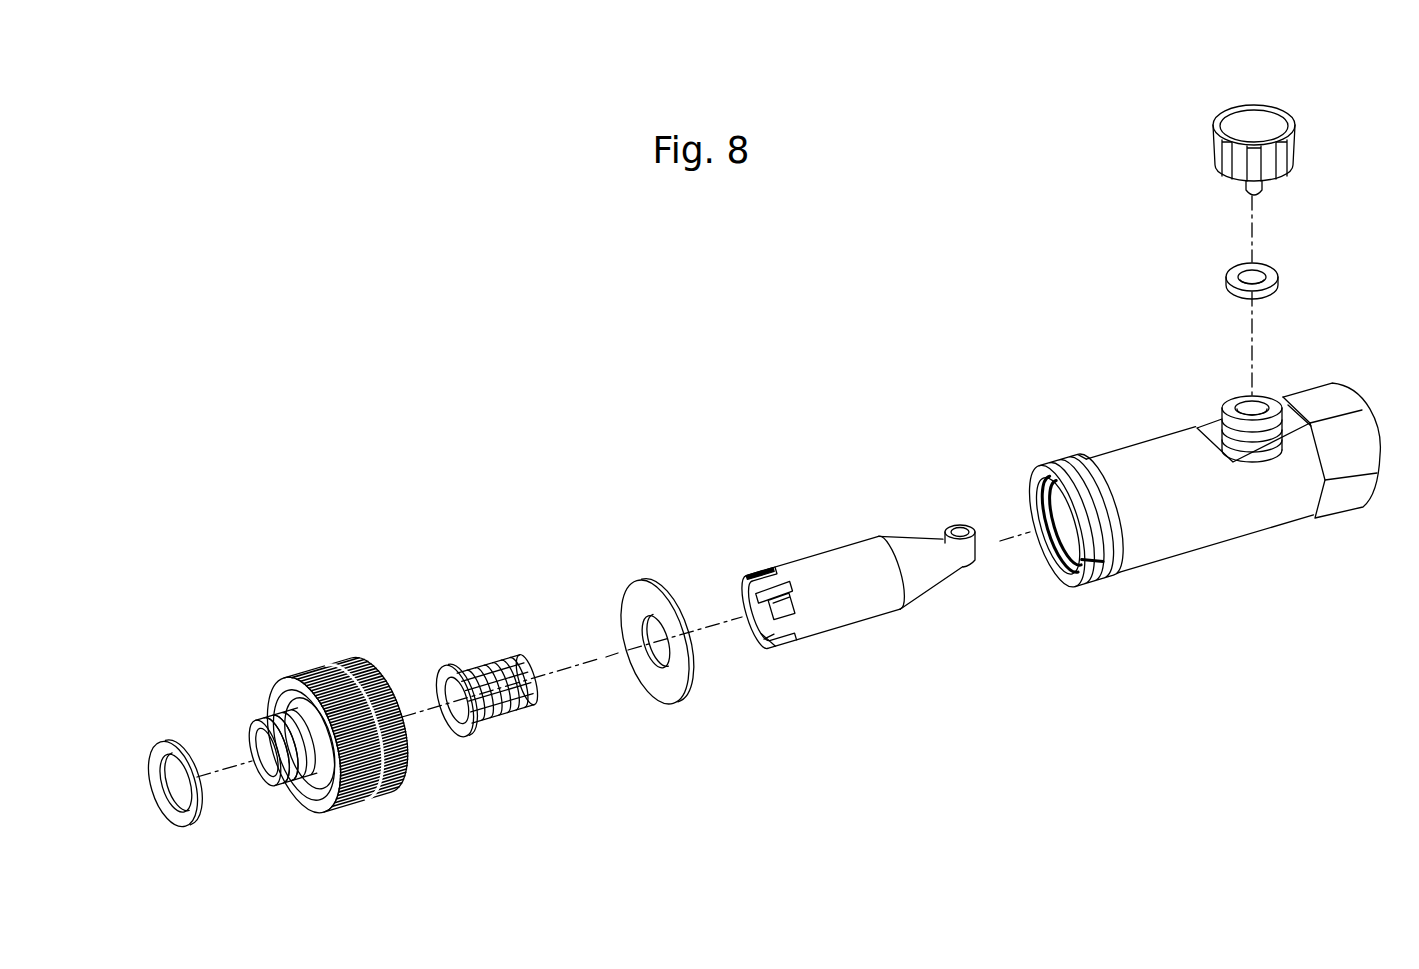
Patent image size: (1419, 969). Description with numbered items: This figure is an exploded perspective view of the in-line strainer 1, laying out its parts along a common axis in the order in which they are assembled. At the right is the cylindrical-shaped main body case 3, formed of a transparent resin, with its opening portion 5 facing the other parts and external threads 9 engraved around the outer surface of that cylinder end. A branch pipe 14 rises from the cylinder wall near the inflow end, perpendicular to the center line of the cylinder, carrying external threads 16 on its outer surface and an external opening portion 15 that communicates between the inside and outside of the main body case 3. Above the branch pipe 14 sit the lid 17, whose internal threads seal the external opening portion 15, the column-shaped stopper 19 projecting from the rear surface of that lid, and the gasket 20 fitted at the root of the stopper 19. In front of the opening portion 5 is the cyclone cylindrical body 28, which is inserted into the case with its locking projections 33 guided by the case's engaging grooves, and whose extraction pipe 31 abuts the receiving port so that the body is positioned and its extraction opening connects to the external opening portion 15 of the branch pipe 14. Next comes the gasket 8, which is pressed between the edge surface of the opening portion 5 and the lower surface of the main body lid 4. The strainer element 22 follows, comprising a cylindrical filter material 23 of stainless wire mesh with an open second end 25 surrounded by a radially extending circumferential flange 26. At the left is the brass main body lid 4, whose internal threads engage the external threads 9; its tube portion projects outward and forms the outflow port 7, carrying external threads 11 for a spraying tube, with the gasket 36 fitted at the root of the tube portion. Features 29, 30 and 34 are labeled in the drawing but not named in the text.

The in-line strainer 1 is at (630, 462).
The main body case 3 is at (1175, 488).
The main body lid 4 is at (305, 655).
The opening portion 5 is at (1043, 503).
The outflow port 7 is at (264, 775).
The gasket 8 is at (645, 678).
The external threads 9 is at (1095, 582).
The external threads 11 is at (268, 718).
The branch pipe 14 is at (1241, 393).
The external opening portion 15 is at (1262, 404).
The external threads 16 is at (1218, 418).
The lid 17 is at (1279, 136).
The stopper 19 is at (1262, 194).
The gasket 20 is at (1283, 282).
The strainer element 22 is at (472, 702).
The filter material 23 is at (506, 718).
The open second end 25 is at (442, 693).
The circumferential flange 26 is at (465, 733).
The cyclone cylindrical body 28 is at (834, 596).
The cylindrical portion 29 is at (868, 628).
The tapered portion 30 is at (935, 592).
The extraction pipe 31 is at (965, 522).
The locking projections 33 is at (785, 562).
The slot 34 is at (798, 603).
The gasket 36 is at (175, 818).